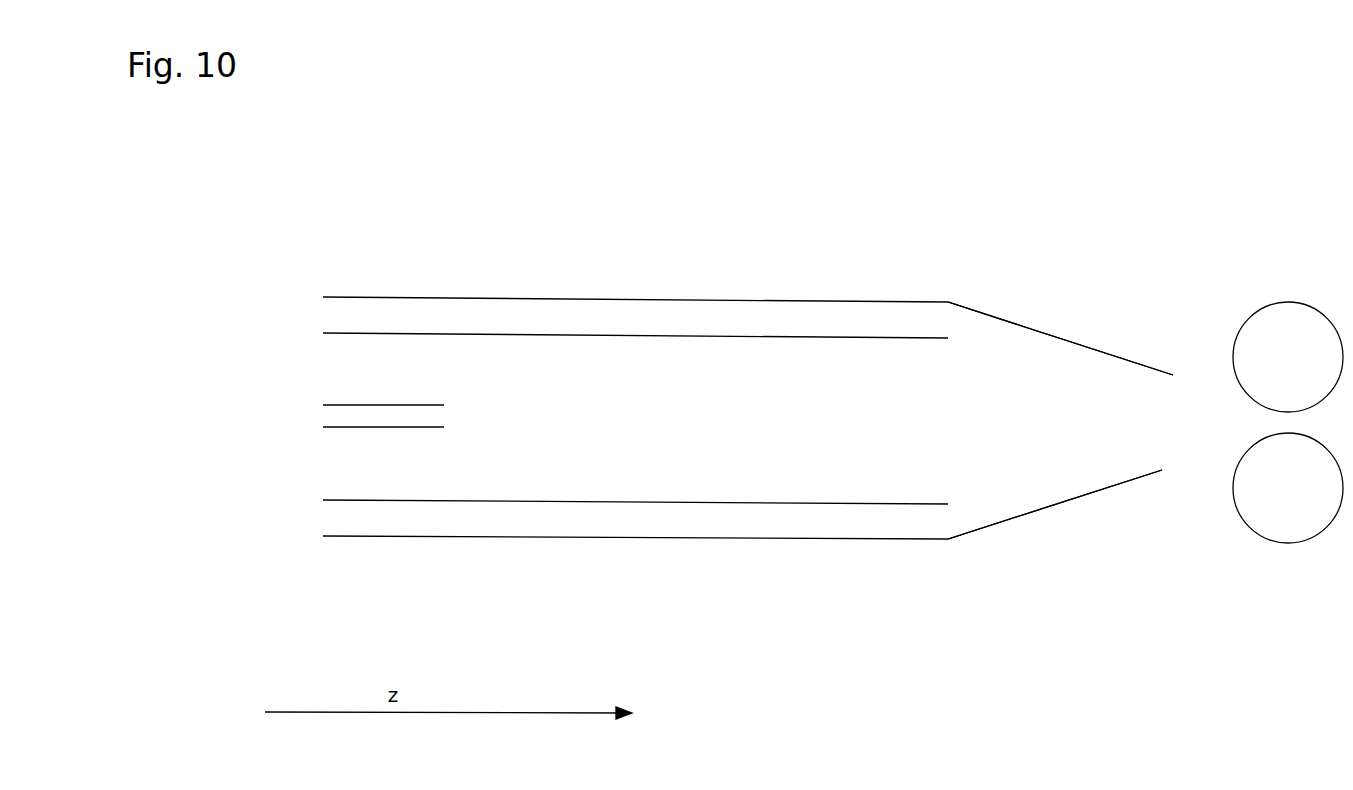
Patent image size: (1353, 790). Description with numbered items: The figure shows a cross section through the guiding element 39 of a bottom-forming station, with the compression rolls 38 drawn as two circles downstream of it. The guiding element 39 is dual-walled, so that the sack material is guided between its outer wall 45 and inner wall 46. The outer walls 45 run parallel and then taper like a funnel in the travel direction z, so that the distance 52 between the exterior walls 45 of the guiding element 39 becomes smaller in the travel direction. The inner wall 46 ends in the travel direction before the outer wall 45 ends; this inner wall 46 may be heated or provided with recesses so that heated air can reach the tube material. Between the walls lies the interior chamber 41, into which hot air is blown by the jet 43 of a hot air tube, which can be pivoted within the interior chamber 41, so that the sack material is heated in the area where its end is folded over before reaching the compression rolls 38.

The compression rolls 38 is at (1282, 517).
The guiding element 39 is at (818, 227).
The interior chamber 41 is at (853, 468).
The jet 43 is at (418, 378).
The outer wall 45 is at (1008, 320).
The inner wall 46 is at (714, 333).
The distance 52 is at (643, 302).